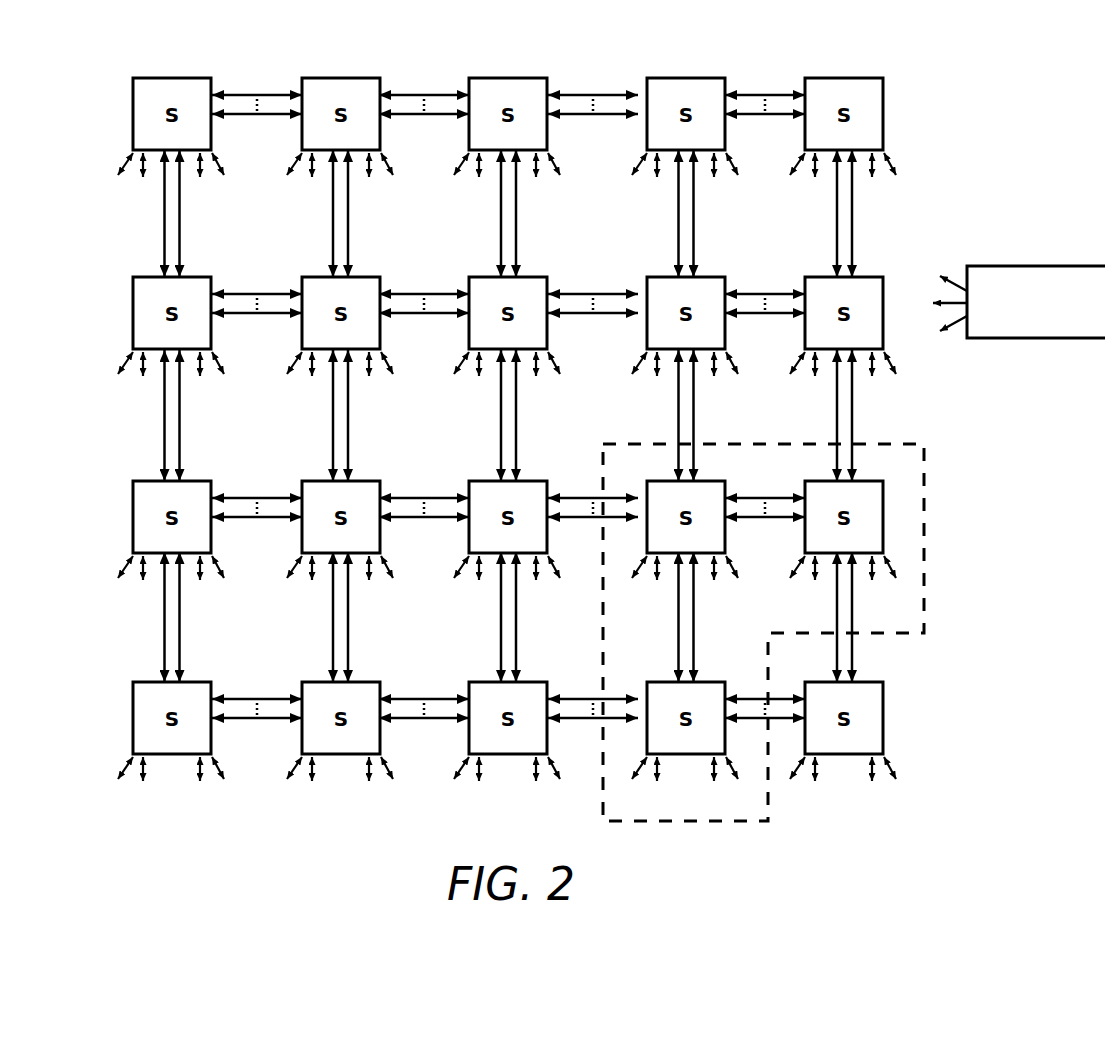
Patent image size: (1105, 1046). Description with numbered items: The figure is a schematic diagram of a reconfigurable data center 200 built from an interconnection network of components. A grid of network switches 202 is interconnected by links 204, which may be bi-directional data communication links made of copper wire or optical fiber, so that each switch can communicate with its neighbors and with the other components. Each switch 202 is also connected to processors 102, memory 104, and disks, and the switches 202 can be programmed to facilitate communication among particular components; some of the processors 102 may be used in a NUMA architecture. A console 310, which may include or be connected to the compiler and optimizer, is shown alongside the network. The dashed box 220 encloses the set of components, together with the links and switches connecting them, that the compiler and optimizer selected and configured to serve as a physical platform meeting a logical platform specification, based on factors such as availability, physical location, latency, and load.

The reconfigurable data center 200 is at (529, 38).
The network switch 202 is at (133, 98).
The processor 102 is at (113, 194).
The link 204 is at (163, 237).
The memory 104 is at (226, 207).
The console 310 is at (1045, 266).
The dashed box 220 is at (924, 557).